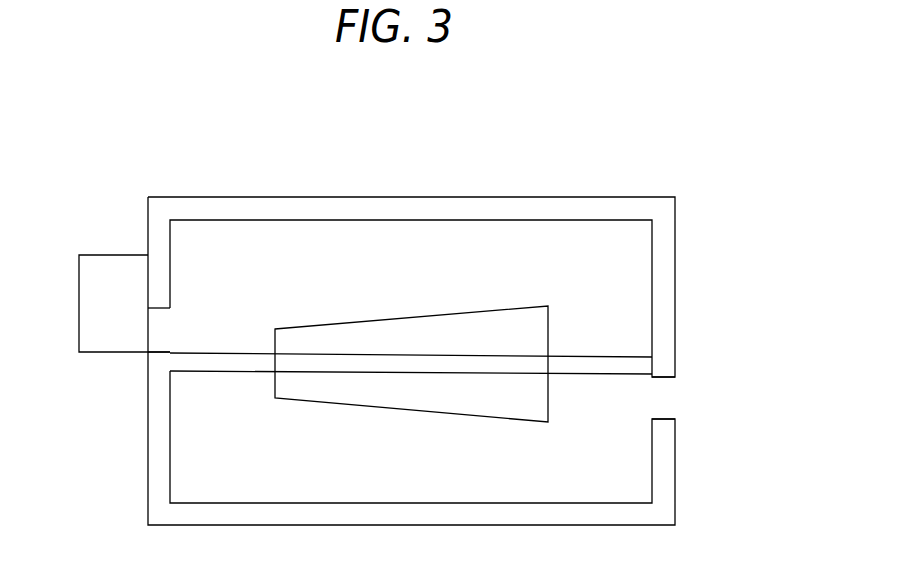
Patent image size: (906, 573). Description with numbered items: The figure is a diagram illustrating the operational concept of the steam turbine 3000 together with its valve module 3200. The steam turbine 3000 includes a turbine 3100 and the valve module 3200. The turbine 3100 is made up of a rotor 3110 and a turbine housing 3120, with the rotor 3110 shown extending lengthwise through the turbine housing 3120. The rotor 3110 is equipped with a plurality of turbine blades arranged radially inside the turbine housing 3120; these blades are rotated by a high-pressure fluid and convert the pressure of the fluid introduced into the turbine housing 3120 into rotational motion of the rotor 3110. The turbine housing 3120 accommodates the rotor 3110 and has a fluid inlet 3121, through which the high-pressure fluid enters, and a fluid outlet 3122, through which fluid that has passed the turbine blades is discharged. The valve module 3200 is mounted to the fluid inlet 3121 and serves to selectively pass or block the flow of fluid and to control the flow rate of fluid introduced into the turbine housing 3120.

The steam turbine 3000 is at (571, 120).
The turbine 3100 is at (412, 317).
The rotor 3110 is at (602, 356).
The turbine housing 3120 is at (628, 197).
The fluid inlet 3121 is at (162, 331).
The fluid outlet 3122 is at (660, 393).
The valve module 3200 is at (112, 254).